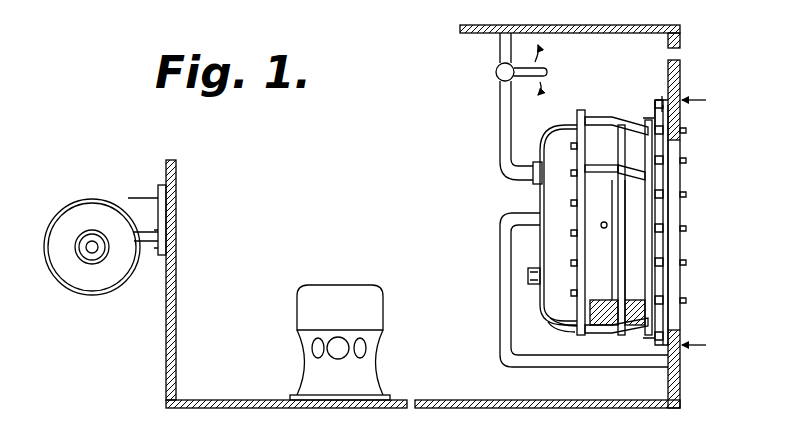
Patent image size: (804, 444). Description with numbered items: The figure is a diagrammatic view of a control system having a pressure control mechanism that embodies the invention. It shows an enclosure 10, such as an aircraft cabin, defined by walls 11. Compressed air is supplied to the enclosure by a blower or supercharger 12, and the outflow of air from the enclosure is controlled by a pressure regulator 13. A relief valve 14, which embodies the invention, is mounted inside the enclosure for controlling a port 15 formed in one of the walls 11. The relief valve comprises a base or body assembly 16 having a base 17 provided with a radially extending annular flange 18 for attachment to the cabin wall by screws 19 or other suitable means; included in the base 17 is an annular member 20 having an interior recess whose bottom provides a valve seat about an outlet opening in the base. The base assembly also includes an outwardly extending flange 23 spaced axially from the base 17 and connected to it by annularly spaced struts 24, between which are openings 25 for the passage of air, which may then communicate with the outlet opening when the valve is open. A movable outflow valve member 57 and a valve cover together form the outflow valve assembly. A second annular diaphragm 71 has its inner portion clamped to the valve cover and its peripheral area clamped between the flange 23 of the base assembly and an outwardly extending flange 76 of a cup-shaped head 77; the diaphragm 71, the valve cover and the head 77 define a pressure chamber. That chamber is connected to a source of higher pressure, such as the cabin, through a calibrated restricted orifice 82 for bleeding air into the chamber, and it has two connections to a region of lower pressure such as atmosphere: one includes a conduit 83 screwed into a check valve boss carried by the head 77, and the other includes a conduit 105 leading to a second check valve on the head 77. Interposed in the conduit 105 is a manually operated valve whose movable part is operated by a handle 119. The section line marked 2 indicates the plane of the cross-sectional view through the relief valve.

The enclosure 10 is at (392, 233).
The walls 11 is at (598, 408).
The blower or supercharger 12 is at (92, 200).
The pressure regulator 13 is at (372, 308).
The relief valve 14 is at (533, 193).
The port 15 is at (672, 211).
The base or body assembly 16 is at (627, 94).
The base 17 is at (490, 74).
The radially extending annular flange 18 is at (665, 196).
The screws 19 is at (660, 262).
The annular member 20 is at (662, 106).
The outwardly extending flange 23 is at (582, 110).
The struts 24 is at (600, 117).
The openings 25 is at (602, 124).
The movable outflow valve member 57 is at (612, 253).
The second diaphragm or flexible member 71 is at (592, 325).
The outwardly extending flange 76 is at (552, 325).
The cup-shaped head 77 is at (545, 326).
The calibrated restricted orifice 82 is at (528, 276).
The conduit 83 is at (503, 332).
The conduit 105 is at (504, 112).
The handle 119 is at (528, 75).
The section line 2- 2 is at (703, 224).